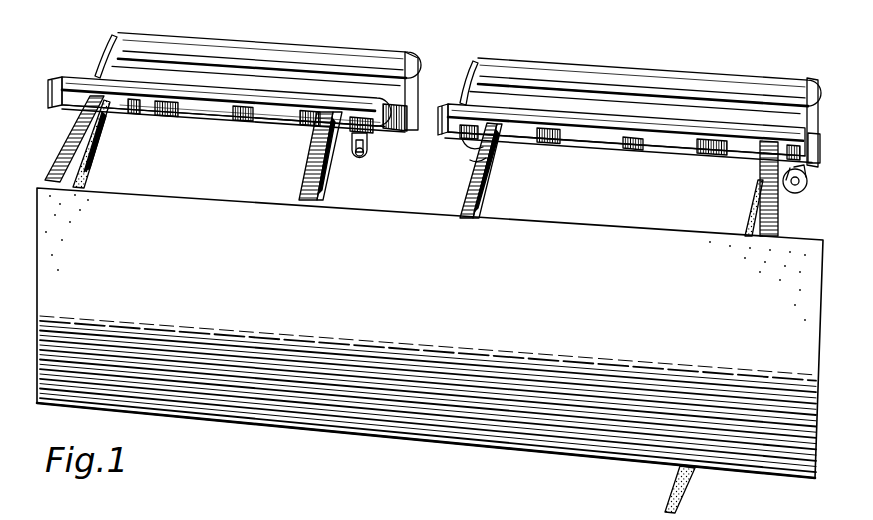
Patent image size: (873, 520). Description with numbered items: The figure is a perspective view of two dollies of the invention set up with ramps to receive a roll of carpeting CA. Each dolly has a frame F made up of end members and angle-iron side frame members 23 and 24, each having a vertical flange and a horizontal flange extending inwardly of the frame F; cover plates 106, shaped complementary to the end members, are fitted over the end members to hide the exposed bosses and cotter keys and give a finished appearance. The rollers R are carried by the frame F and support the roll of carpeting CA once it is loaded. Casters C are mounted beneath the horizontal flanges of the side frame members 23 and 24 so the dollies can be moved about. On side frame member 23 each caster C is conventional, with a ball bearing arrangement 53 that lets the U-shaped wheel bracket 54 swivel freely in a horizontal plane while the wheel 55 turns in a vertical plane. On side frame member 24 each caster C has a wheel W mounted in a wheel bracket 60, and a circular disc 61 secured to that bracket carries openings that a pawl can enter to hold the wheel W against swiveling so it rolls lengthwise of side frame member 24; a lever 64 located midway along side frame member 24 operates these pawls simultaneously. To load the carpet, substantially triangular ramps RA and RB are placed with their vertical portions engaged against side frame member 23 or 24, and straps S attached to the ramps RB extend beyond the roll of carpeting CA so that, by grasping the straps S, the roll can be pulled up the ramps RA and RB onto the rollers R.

The cover plate 106 is at (109, 56).
The rollers R is at (321, 47).
The ramp RB is at (63, 147).
The strap S is at (688, 498).
The side frame member 23 is at (218, 113).
The frame F is at (277, 123).
The ball bearing arrangement 53 is at (350, 127).
The caster C is at (369, 140).
The wheel bracket 54 is at (367, 150).
The wheel 55 is at (362, 158).
The ramp RA is at (305, 177).
The circular disc 61 is at (462, 140).
The wheel bracket 60 is at (473, 157).
The wheel W is at (472, 168).
The side frame member 24 is at (584, 143).
The lever 64 is at (628, 160).
The roll of carpeting CA is at (647, 216).